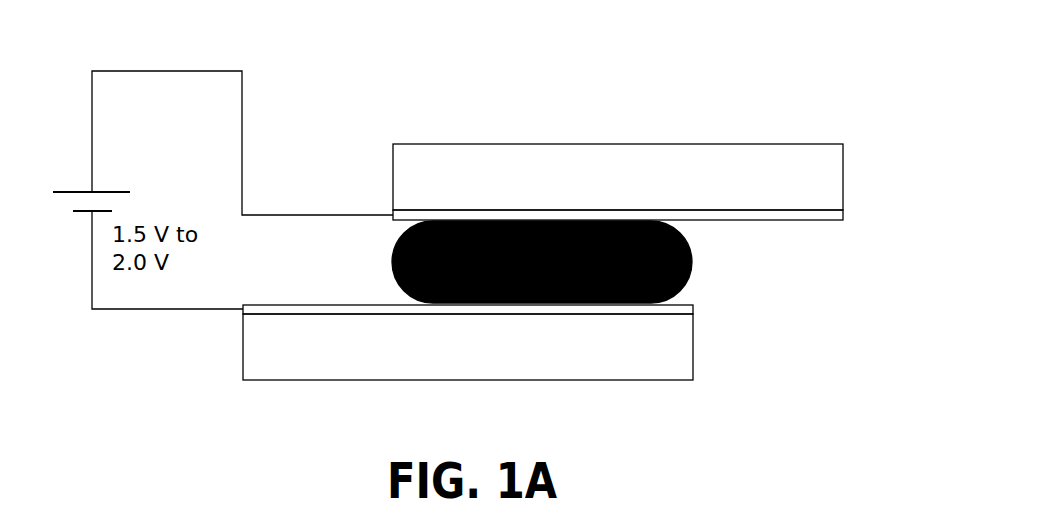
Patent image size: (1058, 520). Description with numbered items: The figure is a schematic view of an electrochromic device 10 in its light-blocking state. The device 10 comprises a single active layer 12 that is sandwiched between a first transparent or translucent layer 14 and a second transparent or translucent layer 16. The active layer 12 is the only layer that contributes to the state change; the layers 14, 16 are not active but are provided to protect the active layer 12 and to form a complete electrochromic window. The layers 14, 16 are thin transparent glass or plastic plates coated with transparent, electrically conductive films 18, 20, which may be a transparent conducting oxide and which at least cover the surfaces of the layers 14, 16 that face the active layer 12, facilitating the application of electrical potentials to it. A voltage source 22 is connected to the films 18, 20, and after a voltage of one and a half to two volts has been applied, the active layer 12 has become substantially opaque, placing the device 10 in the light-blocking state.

The electrochromic device 10 is at (859, 70).
The active layer 12 is at (692, 262).
The first transparent or translucent layer 14 is at (620, 140).
The second transparent or translucent layer 16 is at (430, 382).
The transparent, electrically conductive film 18 is at (815, 222).
The transparent, electrically conductive film 20 is at (365, 305).
The voltage source 22 is at (119, 153).